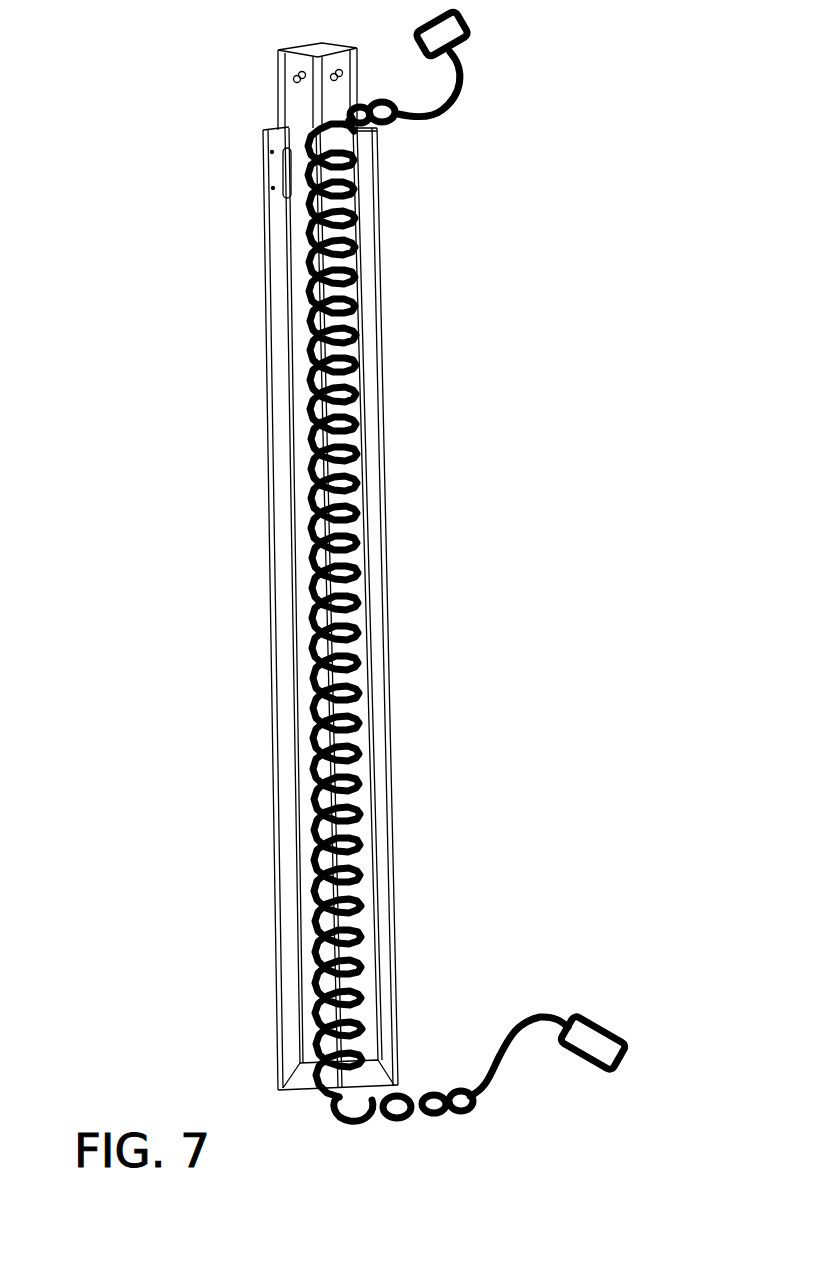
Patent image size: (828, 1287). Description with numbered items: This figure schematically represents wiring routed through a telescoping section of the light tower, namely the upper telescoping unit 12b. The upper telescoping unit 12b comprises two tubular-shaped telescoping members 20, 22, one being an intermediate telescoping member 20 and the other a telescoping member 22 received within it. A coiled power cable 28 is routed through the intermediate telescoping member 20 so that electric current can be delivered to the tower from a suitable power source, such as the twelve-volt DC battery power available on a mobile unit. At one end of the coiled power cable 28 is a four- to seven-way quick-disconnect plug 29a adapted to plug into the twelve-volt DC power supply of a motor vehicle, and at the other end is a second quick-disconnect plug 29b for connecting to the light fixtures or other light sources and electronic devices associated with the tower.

The upper telescoping unit 12b is at (185, 462).
The intermediate telescoping member 20 is at (392, 788).
The telescoping member 22 is at (367, 720).
The coiled power cable 28 is at (346, 558).
The quick-disconnect plug 29a is at (595, 1025).
The second quick-disconnect plug 29b is at (453, 25).